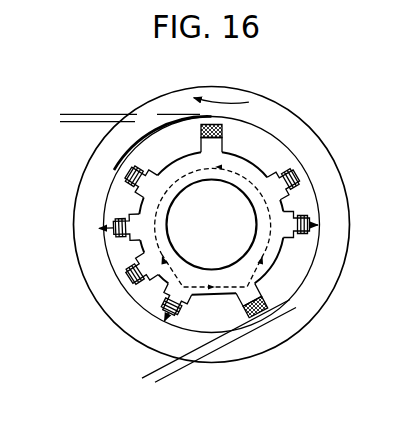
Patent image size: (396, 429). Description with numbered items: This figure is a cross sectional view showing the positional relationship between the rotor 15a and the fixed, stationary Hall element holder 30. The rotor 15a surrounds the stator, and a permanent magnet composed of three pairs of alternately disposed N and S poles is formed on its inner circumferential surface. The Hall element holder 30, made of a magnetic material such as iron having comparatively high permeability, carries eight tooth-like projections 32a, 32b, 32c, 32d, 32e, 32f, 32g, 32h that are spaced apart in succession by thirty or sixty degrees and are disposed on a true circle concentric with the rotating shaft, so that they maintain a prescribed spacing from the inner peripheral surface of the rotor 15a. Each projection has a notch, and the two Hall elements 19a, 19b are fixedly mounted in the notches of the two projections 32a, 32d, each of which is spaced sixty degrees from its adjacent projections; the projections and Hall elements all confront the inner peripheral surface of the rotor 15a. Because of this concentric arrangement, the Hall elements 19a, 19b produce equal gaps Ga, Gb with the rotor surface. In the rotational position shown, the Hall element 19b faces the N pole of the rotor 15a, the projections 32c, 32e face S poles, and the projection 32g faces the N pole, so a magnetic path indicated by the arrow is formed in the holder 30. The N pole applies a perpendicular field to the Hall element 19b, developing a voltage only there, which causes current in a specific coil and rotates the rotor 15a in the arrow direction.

The rotor 15a is at (76, 206).
The Hall element 19a is at (223, 127).
The Hall element 19b is at (268, 316).
The Hall element holder 30 is at (325, 200).
The projection 32a is at (264, 107).
The projection 32b is at (298, 177).
The projection 32c is at (304, 237).
The projection 32d is at (300, 327).
The projection 32e is at (150, 318).
The projection 32f is at (140, 288).
The projection 32g is at (118, 240).
The projection 32h is at (129, 176).
The gap Ga is at (80, 135).
The gap Gb is at (145, 365).